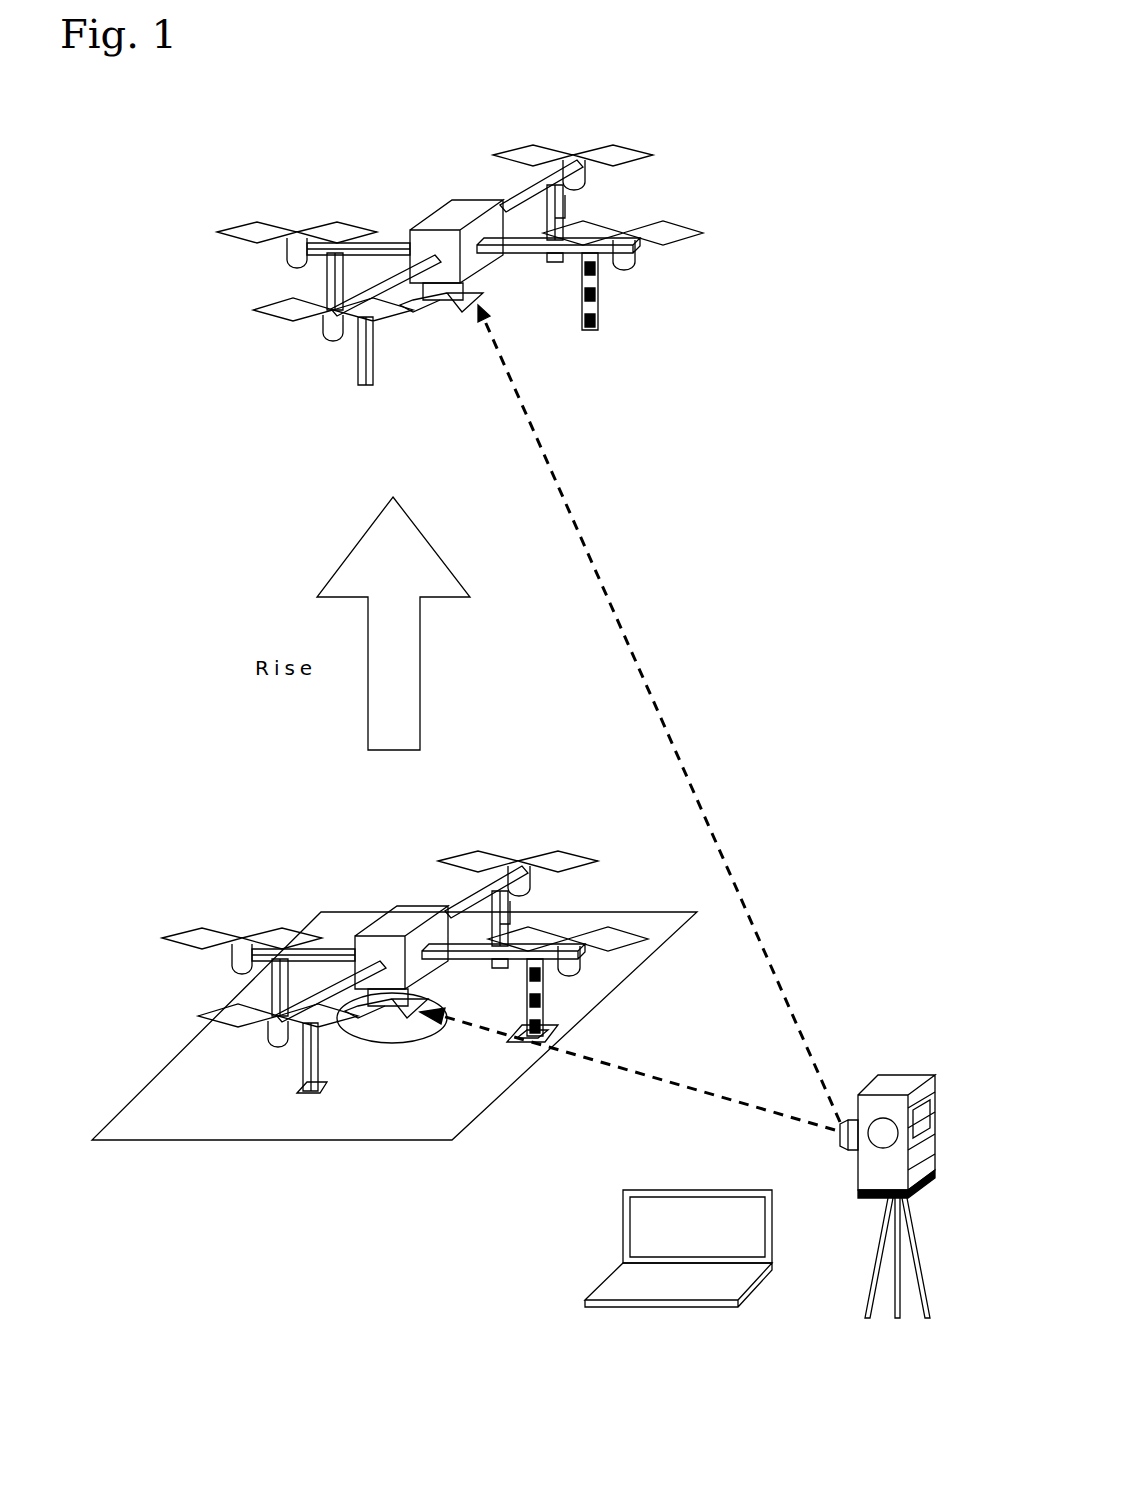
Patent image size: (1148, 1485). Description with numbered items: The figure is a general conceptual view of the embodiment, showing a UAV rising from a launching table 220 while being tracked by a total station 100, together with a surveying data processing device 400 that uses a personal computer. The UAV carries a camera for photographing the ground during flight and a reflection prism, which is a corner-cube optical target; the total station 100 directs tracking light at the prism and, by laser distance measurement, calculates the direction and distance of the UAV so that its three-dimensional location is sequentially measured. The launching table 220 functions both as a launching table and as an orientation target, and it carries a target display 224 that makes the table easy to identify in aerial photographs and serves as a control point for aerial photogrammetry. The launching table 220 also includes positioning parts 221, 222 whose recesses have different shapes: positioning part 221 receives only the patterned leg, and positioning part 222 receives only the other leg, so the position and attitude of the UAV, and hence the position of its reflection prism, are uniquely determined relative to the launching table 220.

The total station 100 is at (895, 1088).
The launching table 220 is at (170, 1142).
The positioning part 221 is at (535, 1045).
The positioning part 222 is at (310, 1093).
The target display 224 is at (440, 1040).
The surveying data processing device 400 is at (680, 1308).